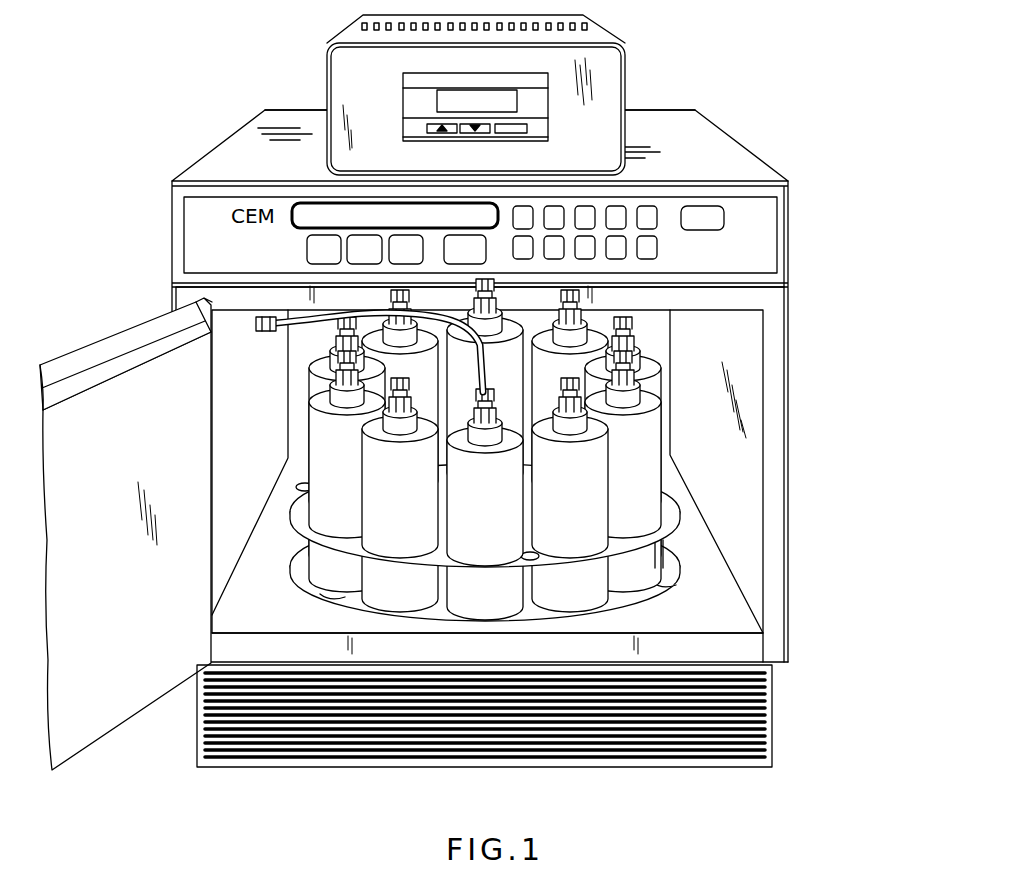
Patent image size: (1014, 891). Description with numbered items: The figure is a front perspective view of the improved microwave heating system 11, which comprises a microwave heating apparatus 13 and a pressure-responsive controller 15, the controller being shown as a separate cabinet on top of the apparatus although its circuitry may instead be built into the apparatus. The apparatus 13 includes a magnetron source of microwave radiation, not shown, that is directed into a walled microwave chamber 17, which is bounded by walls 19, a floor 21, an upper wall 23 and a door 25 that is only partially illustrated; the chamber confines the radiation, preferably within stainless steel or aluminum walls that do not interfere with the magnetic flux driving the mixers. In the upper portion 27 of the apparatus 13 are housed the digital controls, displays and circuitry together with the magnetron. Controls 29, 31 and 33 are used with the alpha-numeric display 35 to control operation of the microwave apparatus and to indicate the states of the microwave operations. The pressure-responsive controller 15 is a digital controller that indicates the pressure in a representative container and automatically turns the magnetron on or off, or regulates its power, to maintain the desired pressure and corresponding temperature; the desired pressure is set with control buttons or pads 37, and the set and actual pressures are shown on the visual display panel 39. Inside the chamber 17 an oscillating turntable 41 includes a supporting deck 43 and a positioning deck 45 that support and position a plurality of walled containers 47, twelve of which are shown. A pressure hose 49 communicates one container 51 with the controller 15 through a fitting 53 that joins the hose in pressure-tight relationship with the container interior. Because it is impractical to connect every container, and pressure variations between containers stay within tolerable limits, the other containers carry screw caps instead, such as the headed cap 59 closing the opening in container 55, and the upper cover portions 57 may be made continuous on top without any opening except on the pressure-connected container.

The microwave heating system 11 is at (790, 412).
The microwave heating apparatus 13 is at (790, 296).
The pressure-responsive controller 15 is at (631, 81).
The microwave chamber 17 is at (708, 620).
The walls 19 is at (222, 356).
The floor 21 is at (743, 626).
The upper wall 23 is at (196, 306).
The door 25 is at (106, 724).
The upper portion 27 is at (728, 132).
The control 29 is at (724, 217).
The control 31 is at (658, 246).
The control 33 is at (307, 246).
The alpha-numeric display 35 is at (306, 205).
The control buttons or pads 37 is at (427, 126).
The visual display panel 39 is at (440, 97).
The turntable 41 is at (317, 600).
The supporting deck 43 is at (620, 601).
The positioning deck 45 is at (659, 556).
The walled containers 47 is at (571, 596).
The pressure hose 49 is at (302, 333).
The container 51 is at (486, 553).
The fitting 53 is at (492, 440).
The container 55 is at (300, 530).
The upper cover portions 57 is at (303, 427).
The headed cap 59 is at (330, 372).